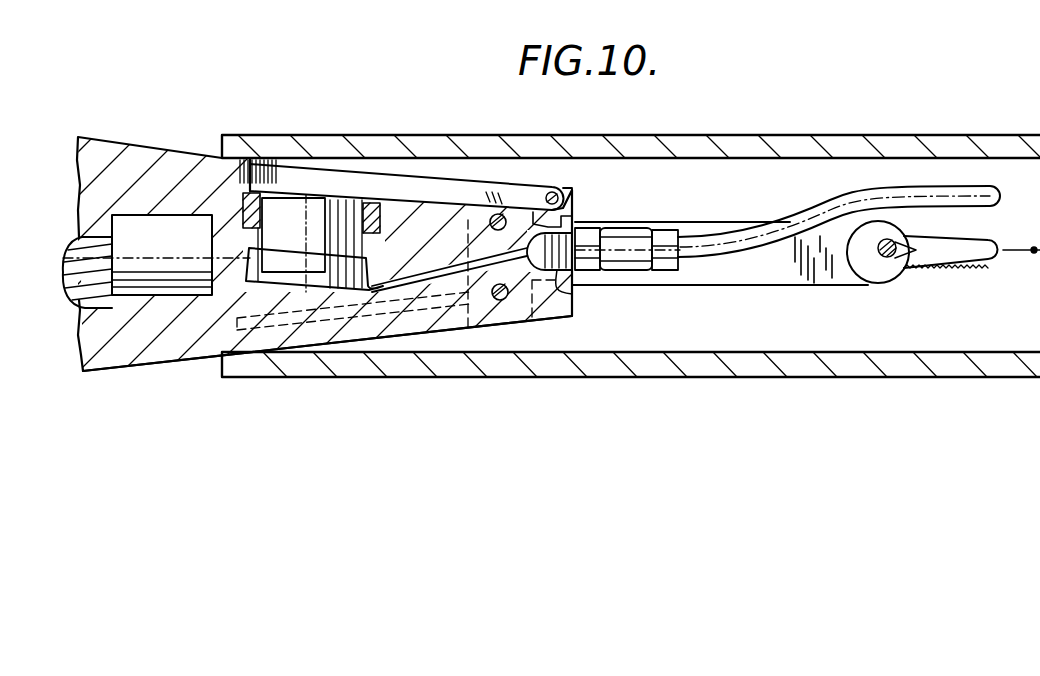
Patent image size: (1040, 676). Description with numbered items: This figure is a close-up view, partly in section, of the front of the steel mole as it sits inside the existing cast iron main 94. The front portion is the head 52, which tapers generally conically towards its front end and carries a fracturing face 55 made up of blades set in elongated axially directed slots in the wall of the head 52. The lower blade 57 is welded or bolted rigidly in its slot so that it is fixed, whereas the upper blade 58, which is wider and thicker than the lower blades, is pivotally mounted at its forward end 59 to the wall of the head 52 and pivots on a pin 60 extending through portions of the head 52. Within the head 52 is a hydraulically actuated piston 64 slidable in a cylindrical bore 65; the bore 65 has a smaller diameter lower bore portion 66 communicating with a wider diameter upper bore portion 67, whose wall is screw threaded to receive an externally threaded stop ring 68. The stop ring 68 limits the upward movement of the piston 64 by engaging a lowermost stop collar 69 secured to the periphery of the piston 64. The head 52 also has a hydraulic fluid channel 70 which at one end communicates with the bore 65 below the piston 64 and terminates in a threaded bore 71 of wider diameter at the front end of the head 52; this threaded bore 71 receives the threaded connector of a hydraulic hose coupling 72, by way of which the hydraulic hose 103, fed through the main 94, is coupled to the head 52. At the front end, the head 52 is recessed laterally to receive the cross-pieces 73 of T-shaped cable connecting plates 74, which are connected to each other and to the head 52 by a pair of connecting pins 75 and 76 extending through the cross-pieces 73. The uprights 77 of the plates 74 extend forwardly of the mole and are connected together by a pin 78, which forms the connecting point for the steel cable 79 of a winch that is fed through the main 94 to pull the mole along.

The head 52 is at (204, 153).
The fracturing face 55 is at (334, 372).
The lower blade 57 is at (396, 326).
The upper blade 58 is at (326, 165).
The forward end of upper blade 59 is at (549, 190).
The pin 60 is at (569, 187).
The hydraulically actuated piston 64 is at (268, 235).
The cylindrical bore 65 is at (247, 237).
The lower bore portion 66 is at (397, 232).
The upper bore portion 67 is at (242, 207).
The stop ring 68 is at (248, 195).
The stop collar 69 is at (295, 280).
The hydraulic fluid channel 70 is at (458, 300).
The threaded bore 71 is at (576, 298).
The hydraulic hose coupling 72 is at (628, 240).
The cross-pieces 73 is at (534, 320).
The T-shaped cable connecting plate 74 is at (724, 285).
The connecting pin 75 is at (501, 300).
The connecting pin 76 is at (567, 222).
The uprights 77 is at (814, 286).
The pin 78 is at (879, 278).
The cable 79 is at (955, 262).
The existing main 94 is at (689, 138).
The hydraulic hose 103 is at (878, 188).